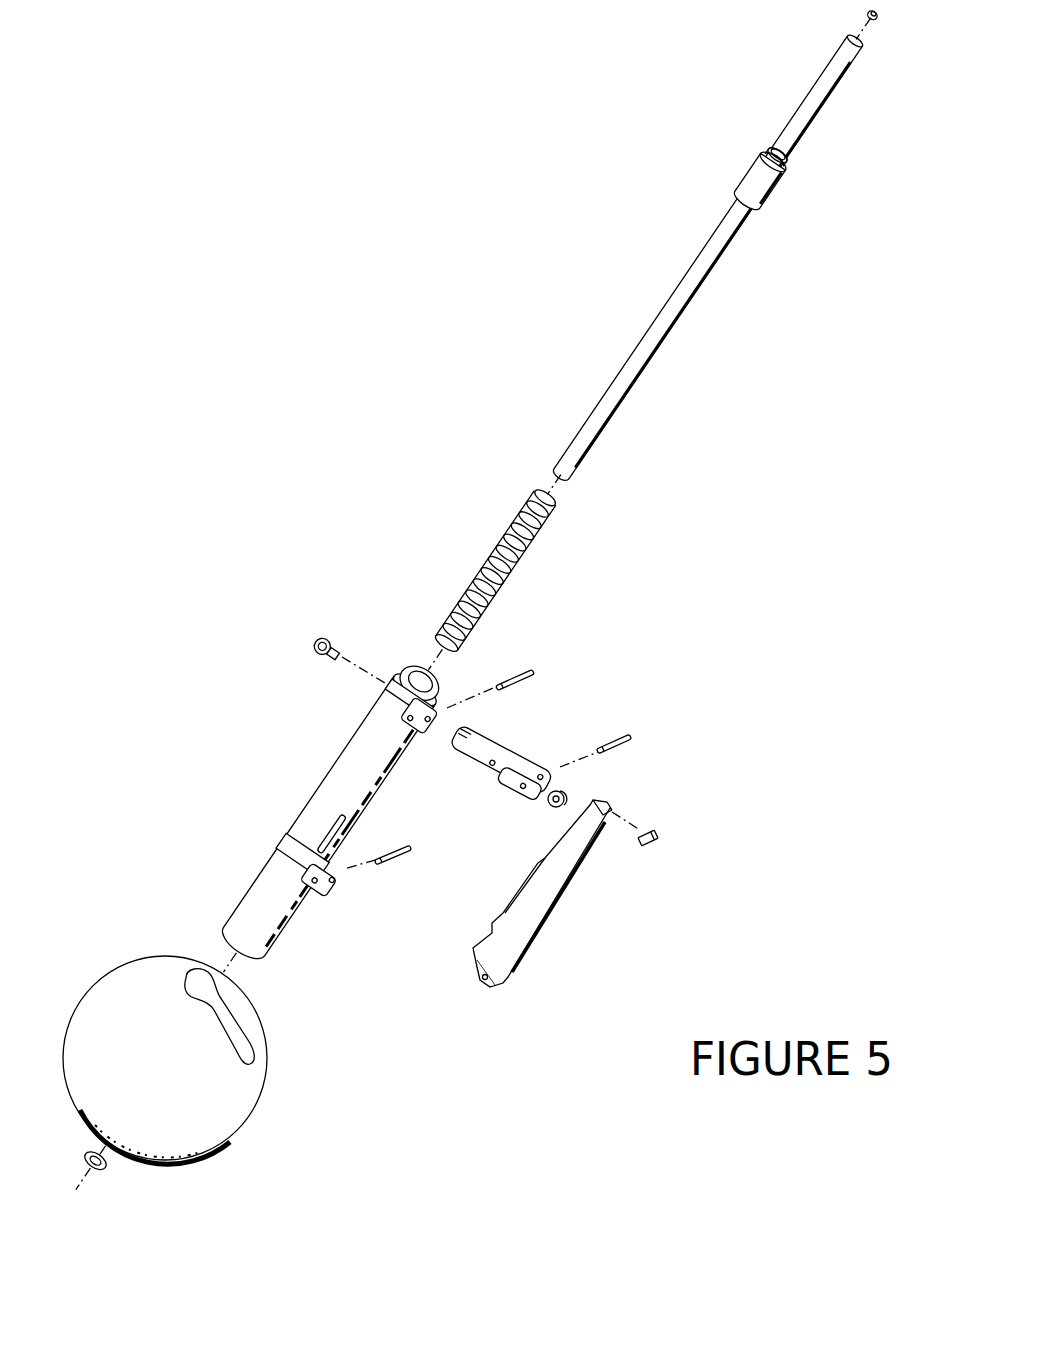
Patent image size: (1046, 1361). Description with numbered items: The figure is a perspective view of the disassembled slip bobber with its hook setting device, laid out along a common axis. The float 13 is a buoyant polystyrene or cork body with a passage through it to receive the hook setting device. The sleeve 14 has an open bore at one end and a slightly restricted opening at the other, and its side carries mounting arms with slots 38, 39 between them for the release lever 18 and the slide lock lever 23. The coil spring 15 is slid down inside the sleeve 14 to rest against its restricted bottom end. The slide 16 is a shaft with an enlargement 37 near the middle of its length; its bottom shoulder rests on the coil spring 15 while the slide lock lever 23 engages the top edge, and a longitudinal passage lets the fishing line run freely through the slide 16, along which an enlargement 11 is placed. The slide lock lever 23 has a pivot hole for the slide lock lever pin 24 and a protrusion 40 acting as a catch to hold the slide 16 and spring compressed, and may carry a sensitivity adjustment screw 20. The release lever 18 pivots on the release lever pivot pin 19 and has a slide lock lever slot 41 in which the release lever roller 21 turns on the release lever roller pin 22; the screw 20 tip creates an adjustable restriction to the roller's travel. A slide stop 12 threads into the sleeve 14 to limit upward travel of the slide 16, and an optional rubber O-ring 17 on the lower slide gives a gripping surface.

The enlargement placed on fishing line 11 is at (868, 14).
The slide stop 12 is at (313, 642).
The float 13 is at (198, 1075).
The sleeve 14 is at (318, 817).
The coil spring 15 is at (500, 538).
The slide 16 is at (680, 292).
The rubber O-ring 17 is at (110, 1163).
The release lever 18 is at (495, 745).
The release lever pivot pin 19 is at (520, 668).
The sensitivity adjustment screw 20 is at (660, 838).
The release lever roller 21 is at (573, 791).
The release lever roller pin 22 is at (623, 735).
The slide lock lever 23 is at (527, 903).
The slide lock lever pin 24 is at (393, 857).
The enlargement 37 is at (767, 178).
The slot 38 is at (440, 698).
The slot 39 is at (347, 832).
The protrusion 40 is at (487, 947).
The slide lock lever slot 41 is at (520, 765).